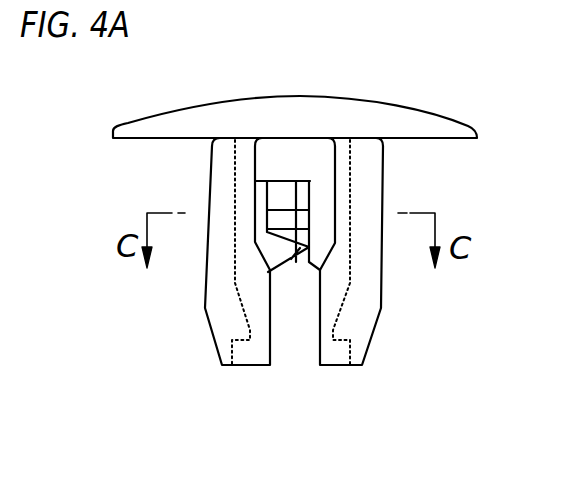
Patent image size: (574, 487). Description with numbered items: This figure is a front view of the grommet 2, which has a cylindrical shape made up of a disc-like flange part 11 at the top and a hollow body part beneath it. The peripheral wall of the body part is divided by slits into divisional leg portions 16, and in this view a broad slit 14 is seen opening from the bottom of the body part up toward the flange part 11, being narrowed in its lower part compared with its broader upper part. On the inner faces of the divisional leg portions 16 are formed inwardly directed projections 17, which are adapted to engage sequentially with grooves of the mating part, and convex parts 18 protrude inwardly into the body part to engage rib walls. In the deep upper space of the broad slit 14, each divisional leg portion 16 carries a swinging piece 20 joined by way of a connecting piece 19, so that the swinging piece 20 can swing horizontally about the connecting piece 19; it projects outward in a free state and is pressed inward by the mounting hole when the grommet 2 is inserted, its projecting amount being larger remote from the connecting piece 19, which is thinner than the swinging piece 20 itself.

The grommet 2 is at (353, 82).
The flange part 11 is at (400, 111).
The broad slit 14 is at (297, 343).
The divisional leg portion 16 is at (215, 310).
The inwardly directed projection 17 is at (248, 339).
The convex part 18 is at (238, 208).
The connecting piece 19 is at (255, 191).
The swinging piece 20 is at (278, 192).